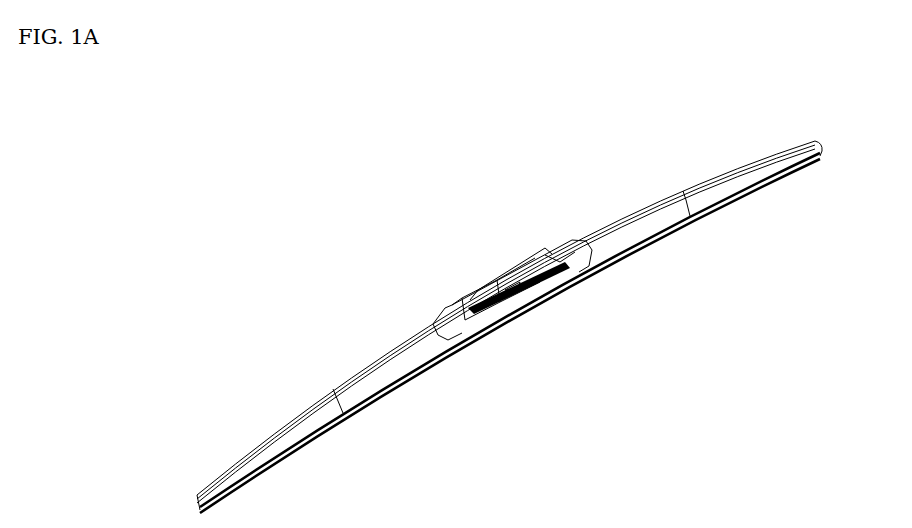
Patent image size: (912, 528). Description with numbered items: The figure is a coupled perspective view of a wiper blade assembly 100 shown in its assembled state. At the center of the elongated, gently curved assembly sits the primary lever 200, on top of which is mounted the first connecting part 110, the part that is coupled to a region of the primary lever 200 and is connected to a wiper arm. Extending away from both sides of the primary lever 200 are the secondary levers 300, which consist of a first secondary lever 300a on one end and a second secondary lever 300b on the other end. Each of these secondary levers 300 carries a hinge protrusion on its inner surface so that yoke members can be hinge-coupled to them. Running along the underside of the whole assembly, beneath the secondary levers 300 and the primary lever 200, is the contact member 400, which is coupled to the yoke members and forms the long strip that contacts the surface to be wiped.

The wiper blade assembly 100 is at (249, 236).
The first connecting part 110 is at (502, 258).
The primary lever 200 is at (418, 310).
The secondary levers 300 is at (578, 133).
The first secondary lever 300a is at (278, 388).
The second secondary lever 300b is at (697, 160).
The contact member 400 is at (523, 350).